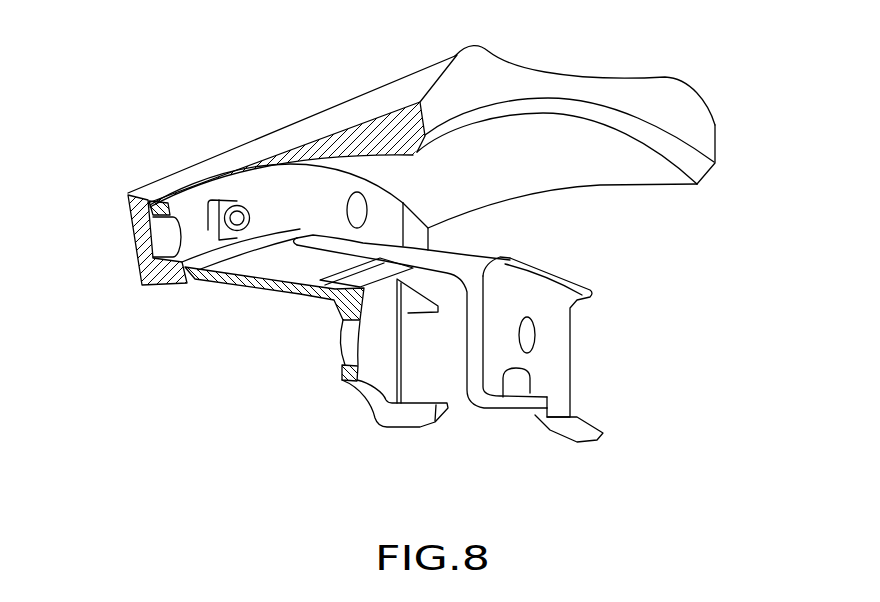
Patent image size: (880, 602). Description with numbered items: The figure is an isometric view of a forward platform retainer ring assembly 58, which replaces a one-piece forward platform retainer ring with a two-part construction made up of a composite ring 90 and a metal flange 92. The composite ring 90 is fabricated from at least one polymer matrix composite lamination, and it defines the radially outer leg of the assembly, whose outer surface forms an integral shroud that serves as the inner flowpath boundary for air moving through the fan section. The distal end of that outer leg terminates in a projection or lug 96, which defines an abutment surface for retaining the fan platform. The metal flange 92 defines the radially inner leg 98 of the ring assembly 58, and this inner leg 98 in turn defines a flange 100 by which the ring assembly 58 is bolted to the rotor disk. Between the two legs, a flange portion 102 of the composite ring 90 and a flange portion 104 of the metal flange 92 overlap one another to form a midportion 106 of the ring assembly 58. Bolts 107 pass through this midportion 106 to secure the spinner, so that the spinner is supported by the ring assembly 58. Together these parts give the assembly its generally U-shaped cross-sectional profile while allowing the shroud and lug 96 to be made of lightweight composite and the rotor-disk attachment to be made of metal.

The forward platform retainer ring assembly 58 is at (238, 95).
The composite ring 90 is at (505, 68).
The metal flange 92 is at (300, 335).
The lug 96 is at (713, 127).
The radially inner leg 98 is at (250, 287).
The flange 100 is at (384, 392).
The flange portion of the composite ring 102 is at (160, 258).
The flange portion of the metal flange 104 is at (192, 236).
The midportion 106 is at (120, 229).
The bolts 107 is at (233, 205).